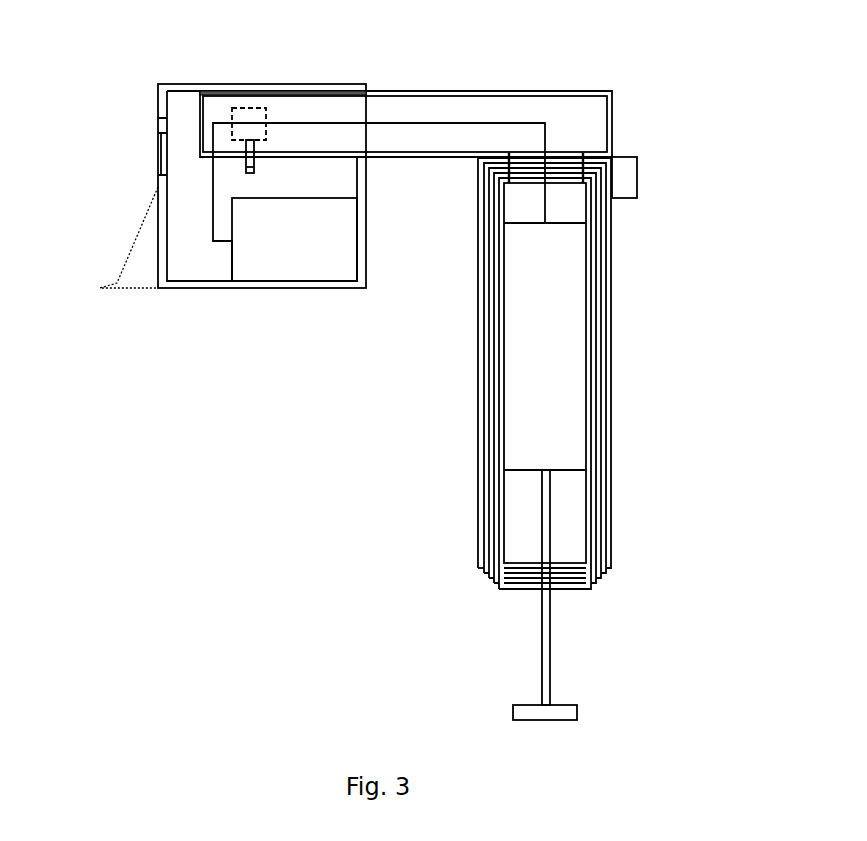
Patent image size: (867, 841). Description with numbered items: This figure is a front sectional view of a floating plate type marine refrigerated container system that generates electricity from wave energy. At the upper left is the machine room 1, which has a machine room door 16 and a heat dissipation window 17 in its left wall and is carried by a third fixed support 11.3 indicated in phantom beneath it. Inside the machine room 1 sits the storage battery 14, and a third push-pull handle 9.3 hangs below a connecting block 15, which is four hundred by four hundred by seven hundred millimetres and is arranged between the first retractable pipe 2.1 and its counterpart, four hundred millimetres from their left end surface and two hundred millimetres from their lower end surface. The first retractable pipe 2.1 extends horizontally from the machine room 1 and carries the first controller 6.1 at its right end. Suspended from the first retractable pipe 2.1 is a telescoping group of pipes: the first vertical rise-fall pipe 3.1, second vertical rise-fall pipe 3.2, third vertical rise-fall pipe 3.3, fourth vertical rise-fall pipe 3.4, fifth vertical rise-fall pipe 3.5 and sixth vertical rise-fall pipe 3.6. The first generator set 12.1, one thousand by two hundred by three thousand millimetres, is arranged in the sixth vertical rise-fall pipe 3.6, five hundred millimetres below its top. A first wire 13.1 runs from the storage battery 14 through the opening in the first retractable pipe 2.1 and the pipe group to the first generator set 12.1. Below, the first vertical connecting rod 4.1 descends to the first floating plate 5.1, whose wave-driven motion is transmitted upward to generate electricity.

The machine room 1 is at (158, 84).
The heat dissipation window 17 is at (157, 139).
The machine room door 16 is at (157, 177).
The third fixed support 11.3 is at (137, 233).
The first retractable pipe 2.1 is at (612, 92).
The first wire 13.1 is at (405, 122).
The connecting block 15 is at (265, 114).
The third push-pull handle 9.3 is at (254, 167).
The storage battery 14 is at (295, 233).
The first controller 6.1 is at (637, 157).
The first vertical rise-fall pipe 3.1 is at (611, 405).
The second vertical rise-fall pipe 3.2 is at (607, 570).
The third vertical rise-fall pipe 3.3 is at (485, 573).
The fourth vertical rise-fall pipe 3.4 is at (602, 580).
The fifth vertical rise-fall pipe 3.5 is at (495, 582).
The sixth vertical rise-fall pipe 3.6 is at (590, 588).
The first generator set 12.1 is at (553, 340).
The first vertical connecting rod 4.1 is at (542, 645).
The first floating plate 5.1 is at (578, 707).